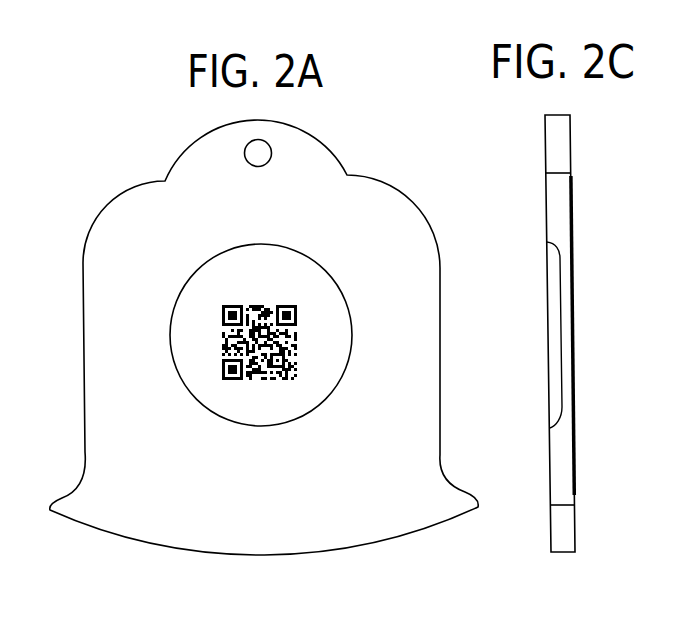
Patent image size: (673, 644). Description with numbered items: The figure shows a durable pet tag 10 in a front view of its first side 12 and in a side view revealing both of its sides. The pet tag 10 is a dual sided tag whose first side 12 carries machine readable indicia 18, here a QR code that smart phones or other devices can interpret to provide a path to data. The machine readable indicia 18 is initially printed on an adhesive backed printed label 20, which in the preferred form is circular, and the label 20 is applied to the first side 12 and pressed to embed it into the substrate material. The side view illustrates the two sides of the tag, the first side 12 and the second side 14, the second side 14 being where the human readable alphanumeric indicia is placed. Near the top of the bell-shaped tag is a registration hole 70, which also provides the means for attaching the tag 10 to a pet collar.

In FIG. 2A, the pet tag 10 is at (77, 222).
In FIG. 2A, the first side 12 is at (420, 433).
In FIG. 2C, the first side 12 is at (548, 437).
In FIG. 2C, the second side 14 is at (573, 360).
In FIG. 2A, the machine readable indicia 18 is at (307, 325).
In FIG. 2A, the adhesive backed printed label 20 is at (182, 308).
In FIG. 2A, the registration hole 70 is at (260, 158).